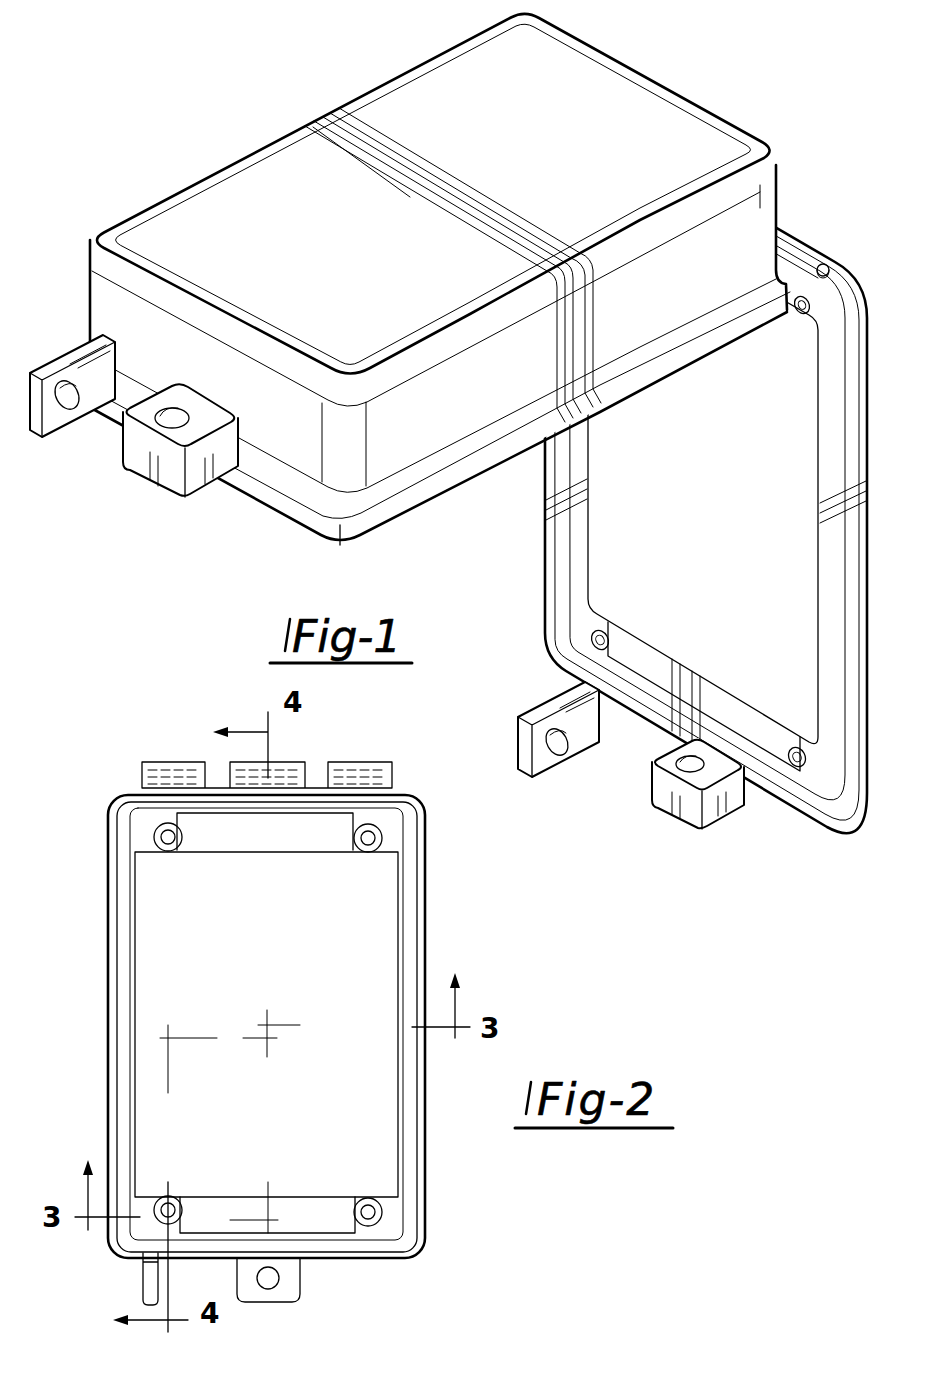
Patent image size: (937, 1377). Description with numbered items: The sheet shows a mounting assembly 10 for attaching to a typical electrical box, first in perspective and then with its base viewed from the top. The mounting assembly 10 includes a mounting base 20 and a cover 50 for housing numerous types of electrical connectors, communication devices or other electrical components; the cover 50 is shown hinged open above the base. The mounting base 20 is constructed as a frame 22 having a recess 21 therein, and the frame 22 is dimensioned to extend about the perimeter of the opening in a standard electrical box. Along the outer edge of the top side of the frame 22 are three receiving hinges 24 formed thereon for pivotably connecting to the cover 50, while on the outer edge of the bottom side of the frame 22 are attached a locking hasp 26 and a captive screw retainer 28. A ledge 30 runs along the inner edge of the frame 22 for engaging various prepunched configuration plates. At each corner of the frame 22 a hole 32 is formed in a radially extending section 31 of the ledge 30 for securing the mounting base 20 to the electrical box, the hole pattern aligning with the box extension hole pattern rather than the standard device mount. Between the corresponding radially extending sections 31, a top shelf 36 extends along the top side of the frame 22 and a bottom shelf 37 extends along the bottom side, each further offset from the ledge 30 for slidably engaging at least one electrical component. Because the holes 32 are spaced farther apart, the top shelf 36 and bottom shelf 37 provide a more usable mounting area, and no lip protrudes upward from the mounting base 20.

In FIG. 1, the mounting assembly 10 is at (294, 553).
In FIG. 1, the cover 50 is at (210, 200).
In FIG. 1, the mounting base 20 is at (856, 569).
In FIG. 2, the mounting base 20 is at (428, 783).
In FIG. 2, the recess 21 is at (330, 993).
In FIG. 2, the frame 22 is at (412, 947).
In FIG. 2, the receiving hinges 24 is at (171, 762).
In FIG. 2, the locking hasp 26 is at (143, 1285).
In FIG. 2, the captive screw retainer 28 is at (300, 1298).
In FIG. 2, the ledge 30 is at (135, 880).
In FIG. 2, the radially extending section 31 is at (138, 815).
In FIG. 2, the hole 32 is at (154, 842).
In FIG. 2, the top shelf 36 is at (285, 835).
In FIG. 2, the bottom shelf 37 is at (337, 1207).